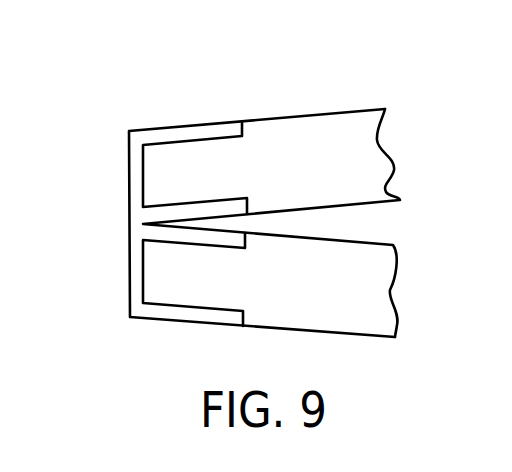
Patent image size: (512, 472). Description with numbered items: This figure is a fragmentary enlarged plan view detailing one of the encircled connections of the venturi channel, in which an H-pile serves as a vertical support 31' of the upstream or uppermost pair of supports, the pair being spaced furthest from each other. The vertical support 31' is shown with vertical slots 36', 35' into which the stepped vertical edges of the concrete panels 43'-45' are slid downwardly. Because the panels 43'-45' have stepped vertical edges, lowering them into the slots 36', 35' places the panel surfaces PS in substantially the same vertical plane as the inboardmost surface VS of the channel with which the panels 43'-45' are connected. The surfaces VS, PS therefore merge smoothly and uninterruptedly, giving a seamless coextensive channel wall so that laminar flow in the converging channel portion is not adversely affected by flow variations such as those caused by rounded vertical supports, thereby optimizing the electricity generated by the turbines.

The vertical support 31' is at (228, 207).
The slot 36' is at (195, 168).
The slot 35' is at (194, 279).
The concrete panels 43'-45' is at (321, 191).
The inboardmost surface VS is at (168, 323).
The panel surface PS is at (351, 337).